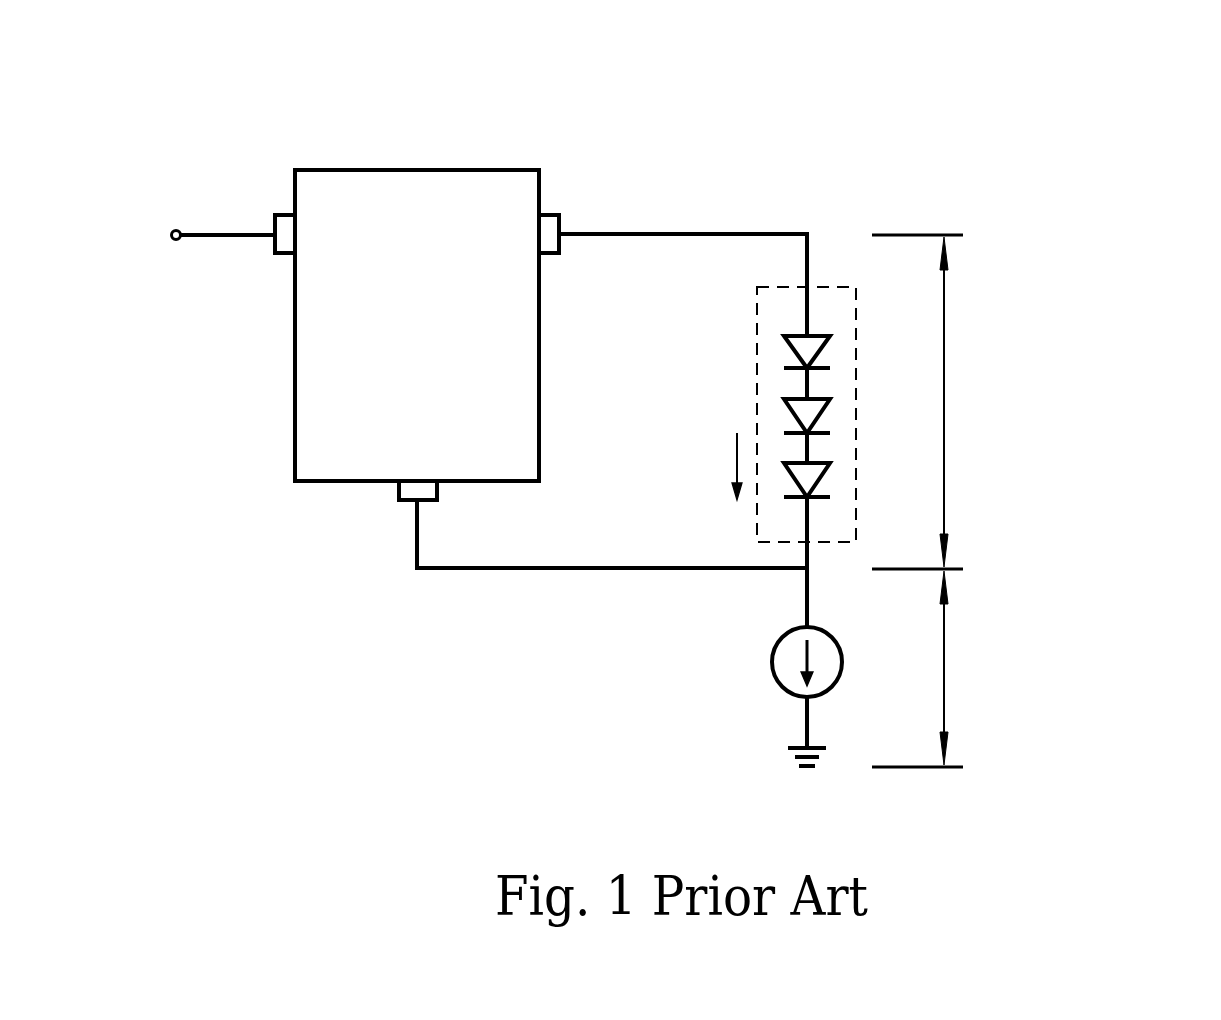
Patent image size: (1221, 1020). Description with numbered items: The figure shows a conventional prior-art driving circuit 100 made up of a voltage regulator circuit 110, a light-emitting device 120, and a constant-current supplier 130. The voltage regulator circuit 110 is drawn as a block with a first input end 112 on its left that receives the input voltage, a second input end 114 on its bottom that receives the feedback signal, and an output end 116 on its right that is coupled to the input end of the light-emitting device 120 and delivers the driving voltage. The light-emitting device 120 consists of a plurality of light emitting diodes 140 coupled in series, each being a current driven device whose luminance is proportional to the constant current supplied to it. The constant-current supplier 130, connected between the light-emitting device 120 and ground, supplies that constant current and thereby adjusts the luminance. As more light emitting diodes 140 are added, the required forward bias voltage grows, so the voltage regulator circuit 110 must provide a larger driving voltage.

The driving circuit 100 is at (1023, 137).
The voltage regulator circuit 110 is at (416, 170).
The first input end 112 is at (280, 214).
The second input end 114 is at (398, 494).
The output end 116 is at (550, 214).
The light-emitting device 120 is at (757, 415).
The constant-current supplier 130 is at (772, 662).
The light emitting diode 140 is at (783, 333).